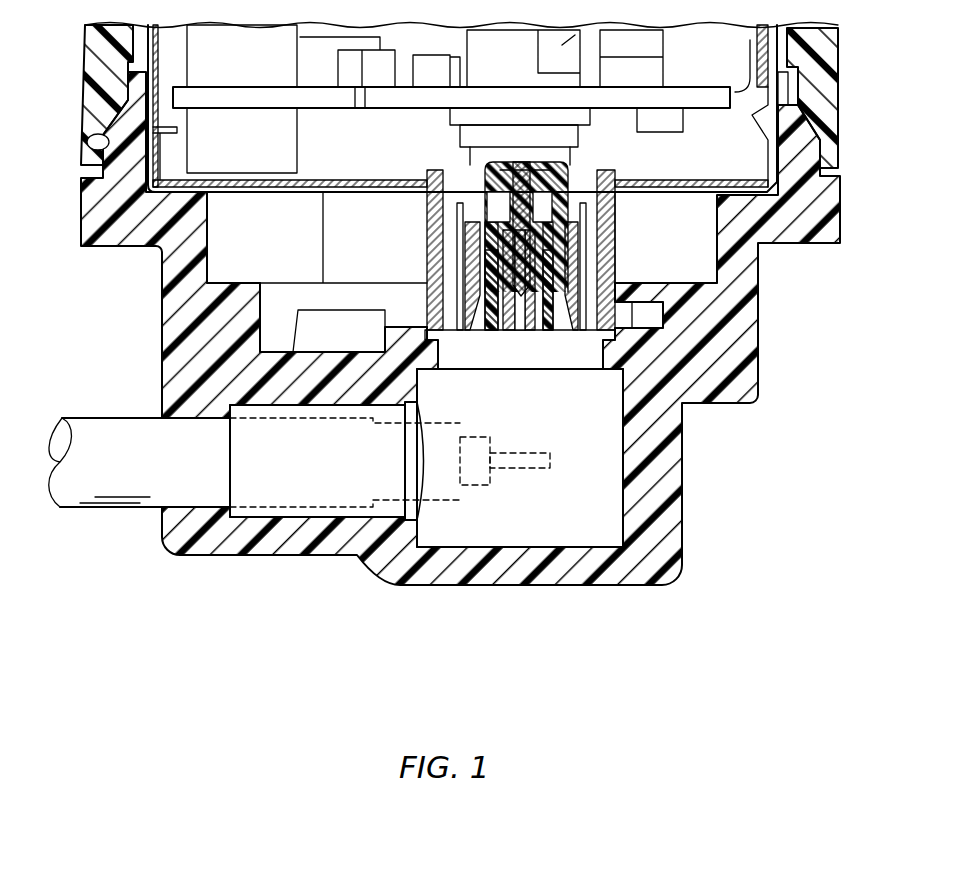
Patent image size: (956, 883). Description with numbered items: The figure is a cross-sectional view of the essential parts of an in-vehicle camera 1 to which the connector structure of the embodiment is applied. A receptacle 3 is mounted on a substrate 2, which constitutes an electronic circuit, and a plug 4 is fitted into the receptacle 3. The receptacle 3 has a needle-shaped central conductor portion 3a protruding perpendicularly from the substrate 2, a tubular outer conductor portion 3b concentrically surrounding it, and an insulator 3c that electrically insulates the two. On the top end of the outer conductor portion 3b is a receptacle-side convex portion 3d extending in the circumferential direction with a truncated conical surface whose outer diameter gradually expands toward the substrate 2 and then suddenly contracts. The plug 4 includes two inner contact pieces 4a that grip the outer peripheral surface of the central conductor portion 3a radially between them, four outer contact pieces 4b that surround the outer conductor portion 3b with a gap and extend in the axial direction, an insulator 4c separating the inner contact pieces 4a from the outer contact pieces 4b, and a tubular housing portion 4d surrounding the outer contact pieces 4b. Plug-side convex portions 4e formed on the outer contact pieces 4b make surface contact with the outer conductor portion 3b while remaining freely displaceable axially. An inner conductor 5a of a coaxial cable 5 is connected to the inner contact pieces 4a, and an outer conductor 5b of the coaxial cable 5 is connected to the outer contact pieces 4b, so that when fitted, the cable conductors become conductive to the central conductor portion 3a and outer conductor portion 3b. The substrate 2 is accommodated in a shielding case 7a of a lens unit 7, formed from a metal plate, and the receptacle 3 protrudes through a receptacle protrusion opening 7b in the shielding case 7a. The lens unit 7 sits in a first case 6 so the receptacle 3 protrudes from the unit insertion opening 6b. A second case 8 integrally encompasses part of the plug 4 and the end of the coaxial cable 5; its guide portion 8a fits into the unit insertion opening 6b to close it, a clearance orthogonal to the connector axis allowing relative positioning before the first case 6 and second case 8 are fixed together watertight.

The in-vehicle camera 1 is at (437, 351).
The substrate 2 is at (680, 93).
The receptacle 3 is at (504, 219).
The central conductor portion 3a is at (522, 168).
The outer conductor portion 3b is at (487, 178).
The insulator 3c is at (512, 168).
The receptacle-side convex portion 3d is at (478, 282).
The plug 4 is at (523, 405).
The inner contact pieces 4a is at (493, 293).
The outer contact pieces 4b is at (465, 252).
The insulator 4c is at (543, 293).
The housing portion 4d is at (606, 205).
The plug-side convex portions 4e is at (460, 222).
The coaxial cable 5 is at (301, 492).
The inner conductor 5a is at (532, 462).
The outer conductor 5b is at (443, 495).
The first case 6 is at (436, 96).
The unit insertion opening 6b is at (90, 140).
The lens unit 7 is at (462, 188).
The shielding case 7a is at (304, 190).
The receptacle protrusion opening 7b is at (412, 181).
The second case 8 is at (438, 349).
The guide portion 8a is at (126, 124).